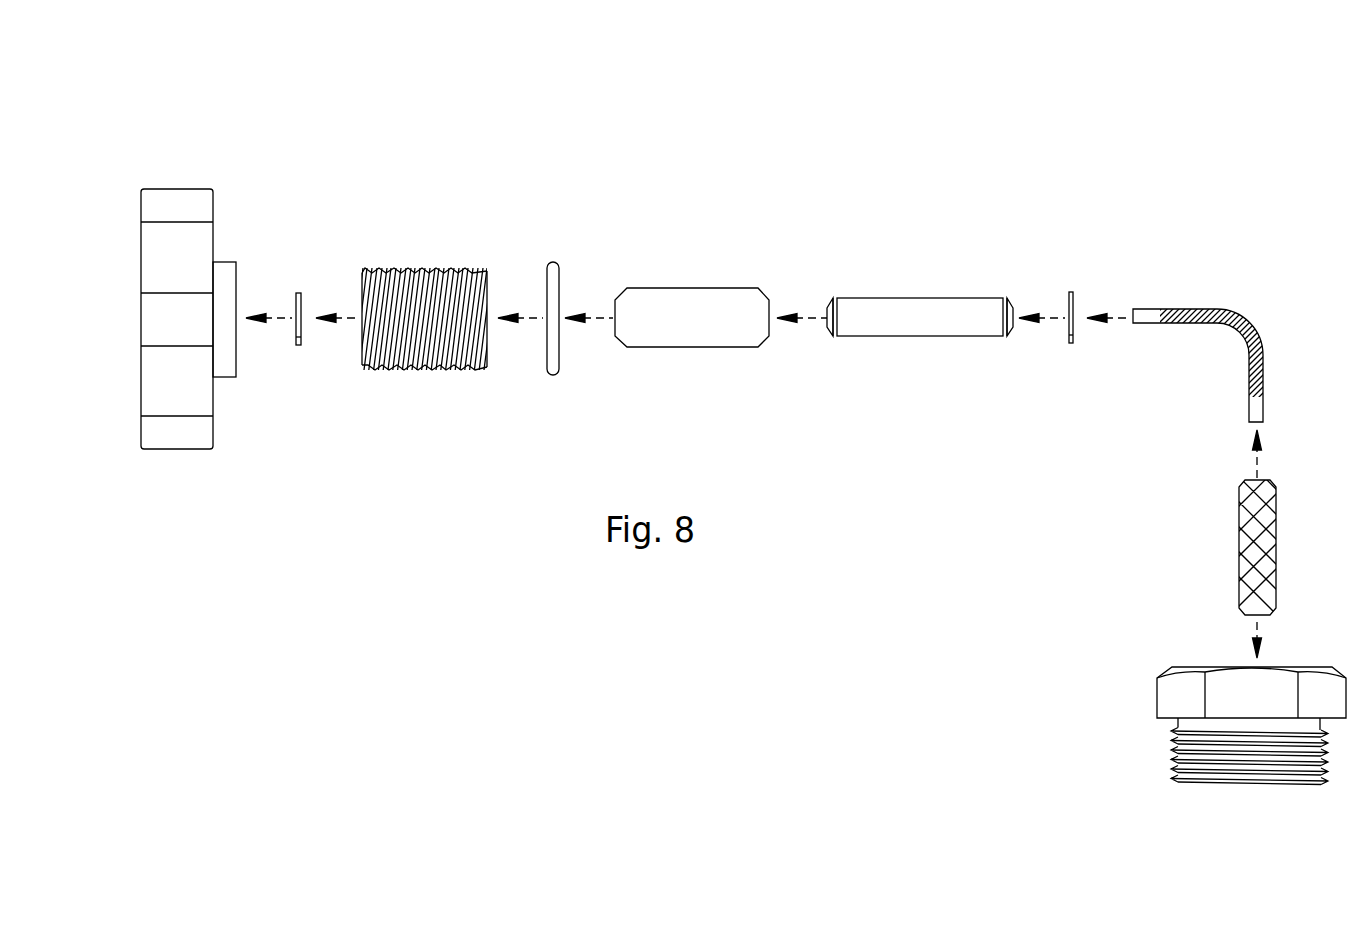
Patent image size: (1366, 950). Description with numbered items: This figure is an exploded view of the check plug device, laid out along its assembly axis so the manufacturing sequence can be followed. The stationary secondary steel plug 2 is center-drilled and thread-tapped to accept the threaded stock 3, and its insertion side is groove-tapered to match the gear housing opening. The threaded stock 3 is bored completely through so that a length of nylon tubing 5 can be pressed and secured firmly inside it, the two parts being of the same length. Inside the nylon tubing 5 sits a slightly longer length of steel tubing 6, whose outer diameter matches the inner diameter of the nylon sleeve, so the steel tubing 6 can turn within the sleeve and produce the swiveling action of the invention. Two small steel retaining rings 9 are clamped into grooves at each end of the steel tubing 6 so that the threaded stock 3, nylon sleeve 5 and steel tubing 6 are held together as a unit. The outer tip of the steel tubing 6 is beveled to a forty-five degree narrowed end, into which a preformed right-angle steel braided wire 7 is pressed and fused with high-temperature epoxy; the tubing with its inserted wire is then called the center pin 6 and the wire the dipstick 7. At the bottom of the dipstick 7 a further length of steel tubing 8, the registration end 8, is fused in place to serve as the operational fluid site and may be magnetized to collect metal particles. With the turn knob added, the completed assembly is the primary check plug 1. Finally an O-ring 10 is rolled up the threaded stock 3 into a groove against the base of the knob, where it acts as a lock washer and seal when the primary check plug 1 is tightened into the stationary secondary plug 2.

The primary check plug 1 is at (180, 185).
The stationary secondary steel plug 2 is at (1153, 690).
The threaded stock 3 is at (408, 262).
The nylon tubing (sleeve) 5 is at (693, 285).
The steel tubing (center pin) 6 is at (863, 295).
The braided wire (dipstick) 7 is at (1170, 308).
The registration end 8 is at (1233, 567).
The steel retaining rings 9 is at (298, 290).
The O-ring 10 is at (555, 253).